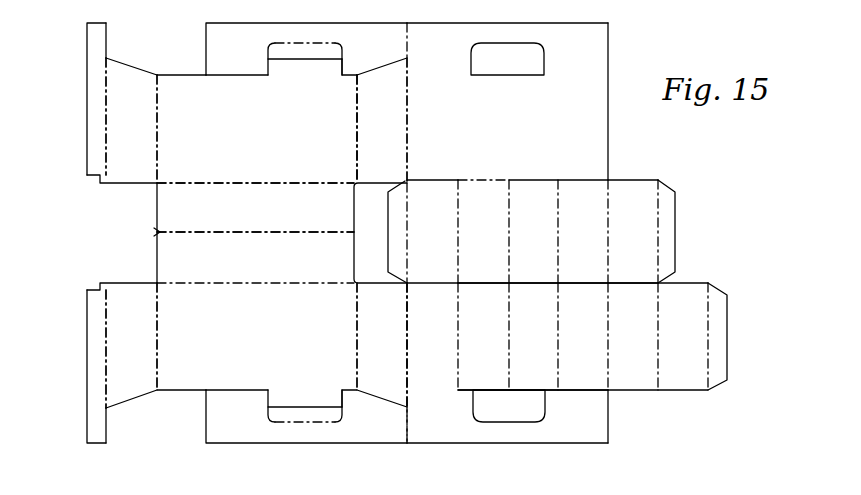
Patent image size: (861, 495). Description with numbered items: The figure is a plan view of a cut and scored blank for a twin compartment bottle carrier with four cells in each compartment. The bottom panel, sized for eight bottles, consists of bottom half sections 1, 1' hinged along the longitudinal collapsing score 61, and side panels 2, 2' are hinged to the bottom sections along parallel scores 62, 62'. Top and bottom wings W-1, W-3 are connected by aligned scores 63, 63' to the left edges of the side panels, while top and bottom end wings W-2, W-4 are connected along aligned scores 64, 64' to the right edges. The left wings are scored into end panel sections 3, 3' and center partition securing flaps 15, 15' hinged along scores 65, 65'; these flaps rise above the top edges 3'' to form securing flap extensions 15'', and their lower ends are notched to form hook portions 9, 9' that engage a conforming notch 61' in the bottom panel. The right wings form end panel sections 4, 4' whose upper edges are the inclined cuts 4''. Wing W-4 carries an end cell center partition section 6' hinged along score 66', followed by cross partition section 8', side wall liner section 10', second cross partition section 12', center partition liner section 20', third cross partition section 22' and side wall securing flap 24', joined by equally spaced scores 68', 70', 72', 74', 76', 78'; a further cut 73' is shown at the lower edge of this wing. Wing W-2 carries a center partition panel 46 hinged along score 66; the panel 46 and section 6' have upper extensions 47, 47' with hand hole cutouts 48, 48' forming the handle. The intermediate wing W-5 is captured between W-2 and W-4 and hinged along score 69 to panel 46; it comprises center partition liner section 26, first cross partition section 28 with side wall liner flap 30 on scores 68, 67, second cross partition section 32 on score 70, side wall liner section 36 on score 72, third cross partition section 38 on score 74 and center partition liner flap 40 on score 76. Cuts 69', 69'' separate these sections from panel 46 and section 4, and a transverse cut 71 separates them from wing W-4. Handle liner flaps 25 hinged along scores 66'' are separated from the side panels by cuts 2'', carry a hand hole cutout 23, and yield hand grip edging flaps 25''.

The bottom half section 1 is at (255, 200).
The bottom half section 1' is at (255, 248).
The side panel 2 is at (257, 129).
The side panel 2' is at (257, 336).
The transverse cut 2'' is at (237, 232).
The end panel section 3 is at (131, 120).
The end panel section 3' is at (131, 345).
The top edge 3'' is at (132, 228).
The end panel section 4 is at (382, 120).
The end panel section 4' is at (391, 345).
The transversely inclined cut 4'' is at (382, 232).
The end cell center partition section 6' is at (507, 363).
The cross partition section 8' is at (483, 347).
The hook portion 9 is at (117, 191).
The hook portion 9' is at (117, 270).
The side wall liner section 10' is at (533, 346).
The second cross partition section 12' is at (583, 346).
The center partition securing flap 15 is at (80, 99).
The center partition securing flap 15' is at (81, 366).
The securing flap extension 15'' is at (123, 226).
The center partition liner section 20' is at (633, 346).
The third cross partition section 22' is at (683, 346).
The hand hole cutout 23 is at (335, 68).
The side wall securing flap 24' is at (742, 336).
The handle liner flap 25 is at (303, 236).
The hand grip edging flap 25'' is at (305, 237).
The center partition liner section 26 is at (475, 219).
The first cross partition section 28 is at (425, 217).
The side wall liner flap 30 is at (392, 244).
The second cross partition section 32 is at (525, 219).
The side wall liner section 36 is at (575, 219).
The third cross partition section 38 is at (625, 219).
The center partition liner flap 40 is at (672, 197).
The center partition panel 46 is at (500, 127).
The upper extension 47 is at (584, 90).
The upper extension 47' is at (583, 432).
The hand hole cutout 48 is at (507, 37).
The hand hole cutout 48' is at (509, 432).
The collapsing score 61 is at (255, 221).
The notch 61' is at (138, 233).
The score 62 is at (255, 171).
The score 62' is at (255, 295).
The score 63 is at (174, 129).
The score 63' is at (178, 336).
The score 64 is at (337, 129).
The score 64' is at (336, 336).
The score 65 is at (122, 116).
The score 65' is at (125, 349).
The transverse score 66 is at (425, 120).
The transverse score 66' is at (426, 345).
The transverse score 66'' is at (410, 238).
The transverse score 67 is at (408, 262).
The transverse score 68 is at (472, 231).
The transverse score 68' is at (476, 336).
The transverse score 69 is at (483, 163).
The transverse cut 69' is at (432, 163).
The cut 69'' is at (583, 163).
The transverse score 70 is at (524, 231).
The transverse score 70' is at (527, 336).
The transverse cut 71 is at (540, 285).
The transverse score 72 is at (575, 231).
The transverse score 72' is at (577, 336).
The cut line 73' is at (554, 405).
The transverse score 74 is at (625, 231).
The transverse score 74' is at (627, 336).
The transverse score 76 is at (688, 231).
The transverse score 76' is at (677, 336).
The transverse score 78' is at (738, 336).
The top wing W-1 is at (82, 139).
The top end wing W-2 is at (610, 129).
The bottom wing W-3 is at (85, 365).
The bottom end wing W-4 is at (730, 333).
The intermediate wing W-5 is at (680, 219).